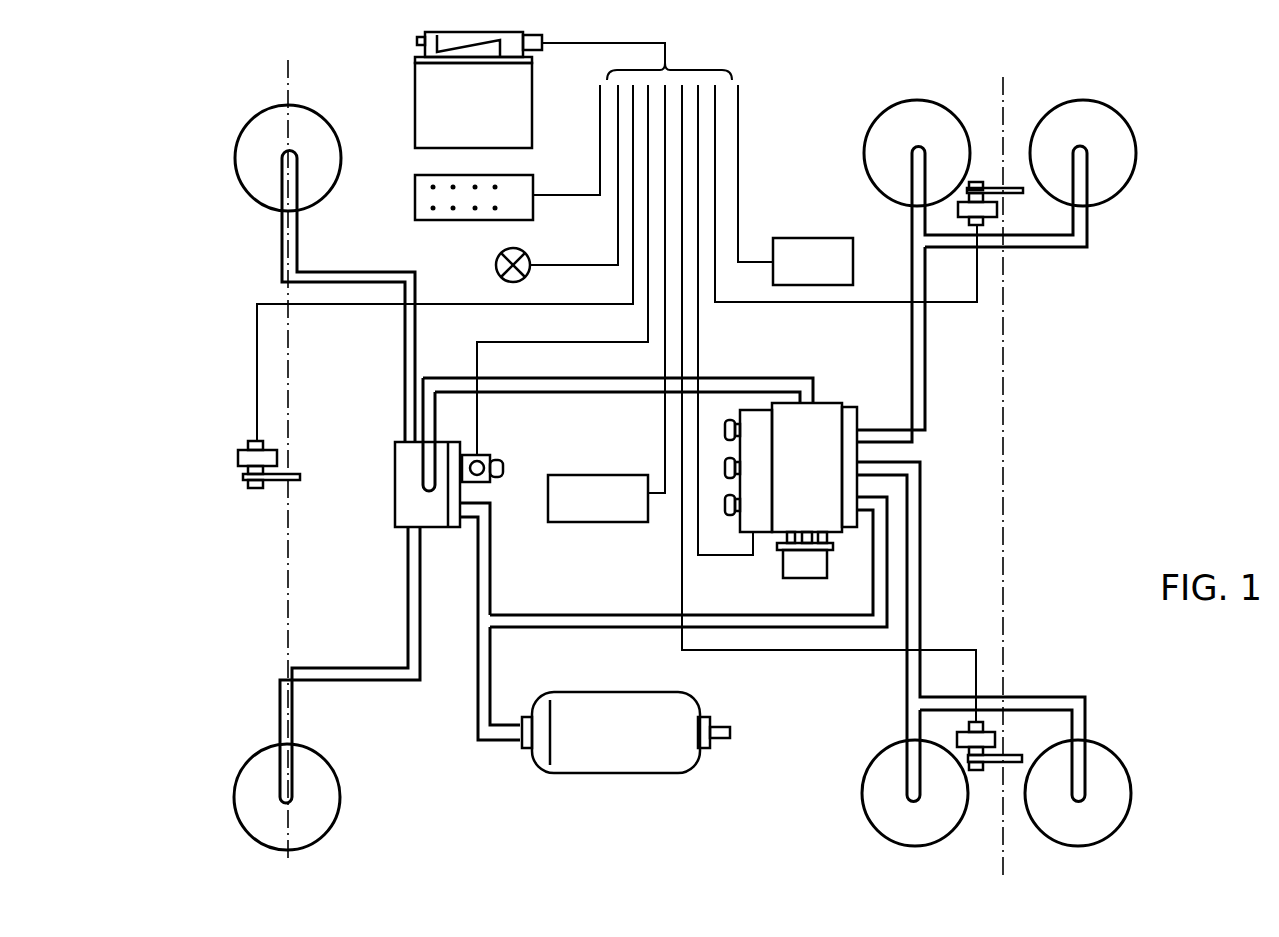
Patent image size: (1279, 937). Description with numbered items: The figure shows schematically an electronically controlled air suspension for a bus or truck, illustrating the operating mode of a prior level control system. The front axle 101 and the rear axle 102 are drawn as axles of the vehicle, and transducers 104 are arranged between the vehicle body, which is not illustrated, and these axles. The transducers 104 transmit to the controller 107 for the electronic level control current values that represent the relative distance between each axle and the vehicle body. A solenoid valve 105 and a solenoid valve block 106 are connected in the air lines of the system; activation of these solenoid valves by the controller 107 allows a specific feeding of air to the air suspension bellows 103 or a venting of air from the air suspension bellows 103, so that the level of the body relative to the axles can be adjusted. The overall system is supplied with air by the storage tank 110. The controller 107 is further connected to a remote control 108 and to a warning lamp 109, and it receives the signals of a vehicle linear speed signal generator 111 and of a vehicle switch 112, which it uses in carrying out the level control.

The front axle 101 is at (288, 73).
The rear axle 102 is at (1003, 97).
The air suspension bellows 103 is at (308, 138).
The transducer 104 is at (242, 455).
The solenoid valve 105 is at (407, 493).
The solenoid valve block 106 is at (822, 432).
The controller 107 is at (492, 122).
The remote control 108 is at (420, 192).
The warning lamp 109 is at (496, 265).
The storage tank 110 is at (630, 752).
The vehicle linear speed signal generator 111 is at (597, 505).
The vehicle switch 112 is at (808, 248).